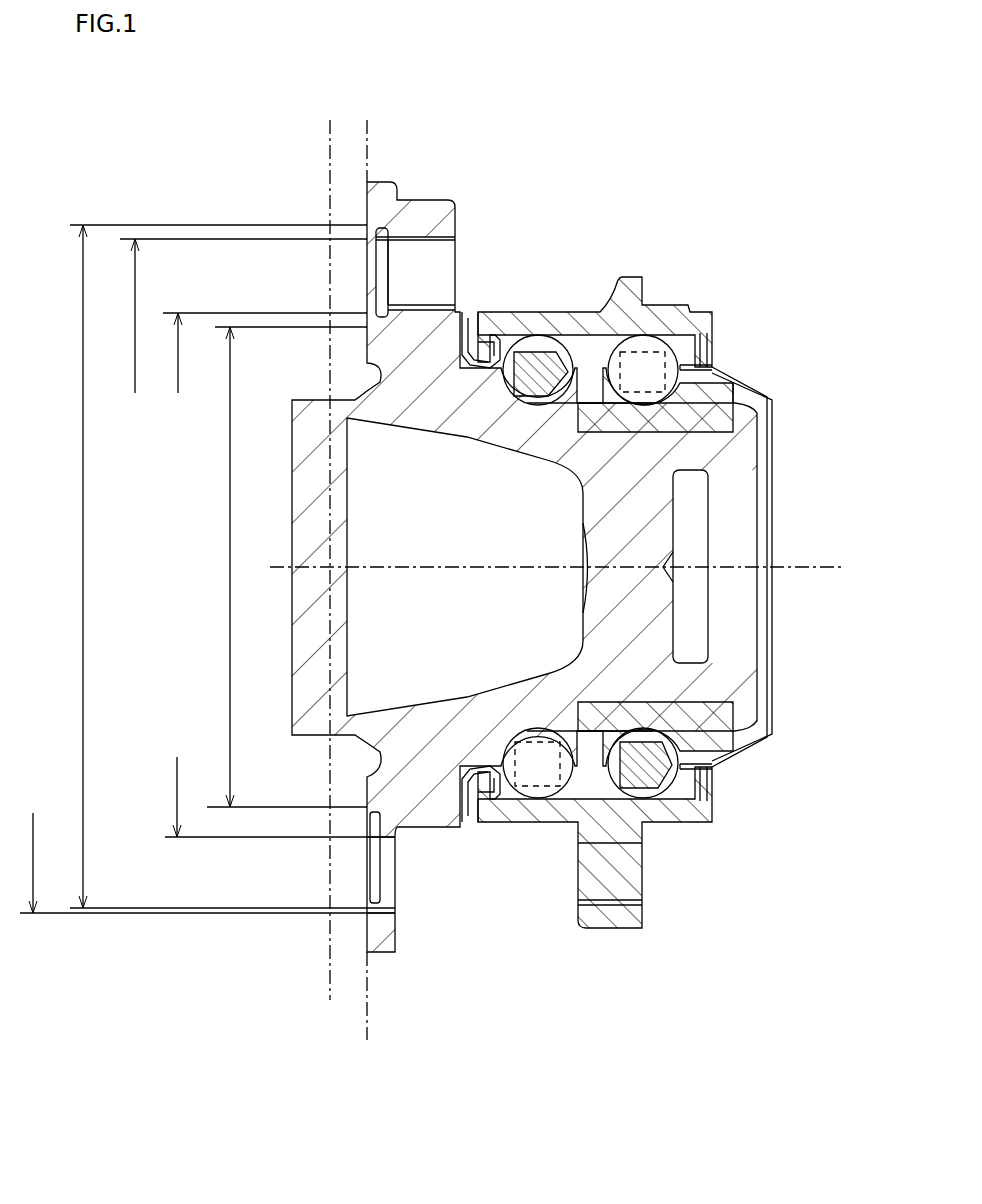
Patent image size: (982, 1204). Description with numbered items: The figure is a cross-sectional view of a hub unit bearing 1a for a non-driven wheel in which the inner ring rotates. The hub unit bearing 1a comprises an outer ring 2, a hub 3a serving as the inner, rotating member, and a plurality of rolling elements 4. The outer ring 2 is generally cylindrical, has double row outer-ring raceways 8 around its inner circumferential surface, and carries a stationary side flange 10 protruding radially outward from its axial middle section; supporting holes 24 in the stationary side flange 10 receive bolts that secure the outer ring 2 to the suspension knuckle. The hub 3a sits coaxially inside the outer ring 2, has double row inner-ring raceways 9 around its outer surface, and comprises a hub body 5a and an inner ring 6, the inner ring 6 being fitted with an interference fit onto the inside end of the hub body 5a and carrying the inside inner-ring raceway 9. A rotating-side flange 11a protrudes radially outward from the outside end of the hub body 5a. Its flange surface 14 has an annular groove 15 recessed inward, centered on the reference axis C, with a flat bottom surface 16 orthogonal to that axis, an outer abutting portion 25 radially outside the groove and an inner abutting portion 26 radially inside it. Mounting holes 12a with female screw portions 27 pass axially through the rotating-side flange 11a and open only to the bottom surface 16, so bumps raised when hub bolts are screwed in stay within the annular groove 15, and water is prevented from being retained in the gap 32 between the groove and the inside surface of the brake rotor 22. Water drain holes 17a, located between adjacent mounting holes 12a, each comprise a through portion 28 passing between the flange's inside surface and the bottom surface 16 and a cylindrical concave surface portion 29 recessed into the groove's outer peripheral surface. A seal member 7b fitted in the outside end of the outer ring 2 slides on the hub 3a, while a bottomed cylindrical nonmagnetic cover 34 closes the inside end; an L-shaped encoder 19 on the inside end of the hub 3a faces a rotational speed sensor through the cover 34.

The hub unit bearing 1a is at (714, 304).
The outer ring 2 is at (577, 322).
The hub 3a is at (382, 372).
The rolling elements 4 is at (538, 336).
The hub body 5a is at (456, 420).
The inner ring 6 is at (718, 405).
The seal member 7b is at (481, 340).
The outer-ring raceways 8 is at (552, 790).
The inner-ring raceways 9 is at (527, 800).
The stationary side flange 10 is at (606, 920).
The rotating-side flange 11a is at (413, 212).
The mounting holes 12a is at (392, 252).
The flange surface 14 is at (212, 1060).
The annular groove 15 is at (372, 800).
The bottom surface 16 is at (375, 832).
The water drain holes 17a is at (494, 1030).
The encoder 19 is at (716, 352).
The brake rotor 22 is at (335, 128).
The supporting holes 24 is at (620, 830).
The outer abutting portion 25 is at (386, 905).
The inner abutting portion 26 is at (366, 772).
The female screw portions 27 is at (440, 248).
The through portion 28 is at (393, 838).
The concave surface portion 29 is at (393, 905).
The gap 32 is at (368, 297).
The cover 34 is at (776, 478).
The reference axis C is at (793, 570).